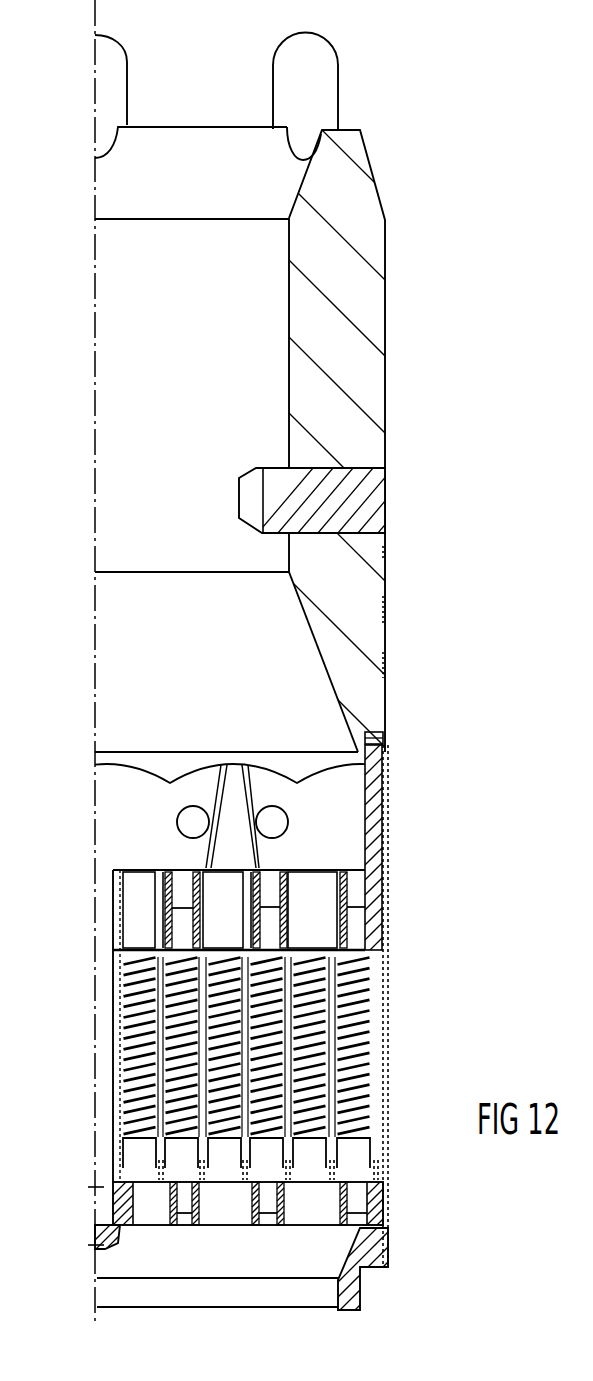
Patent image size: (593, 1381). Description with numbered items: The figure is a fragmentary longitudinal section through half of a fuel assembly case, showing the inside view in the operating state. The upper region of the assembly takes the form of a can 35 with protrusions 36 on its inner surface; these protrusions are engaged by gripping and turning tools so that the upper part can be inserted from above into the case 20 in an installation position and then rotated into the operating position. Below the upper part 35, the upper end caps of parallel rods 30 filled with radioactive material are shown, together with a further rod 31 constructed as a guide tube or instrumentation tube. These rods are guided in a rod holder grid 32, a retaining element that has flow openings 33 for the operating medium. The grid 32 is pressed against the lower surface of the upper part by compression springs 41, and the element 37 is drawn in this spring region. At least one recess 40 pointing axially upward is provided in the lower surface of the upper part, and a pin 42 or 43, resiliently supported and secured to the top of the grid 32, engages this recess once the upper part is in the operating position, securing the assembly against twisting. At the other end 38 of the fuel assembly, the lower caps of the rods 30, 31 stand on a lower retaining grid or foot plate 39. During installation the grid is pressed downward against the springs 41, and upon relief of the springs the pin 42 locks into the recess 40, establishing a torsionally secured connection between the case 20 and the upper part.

The case 20 is at (388, 757).
The rods 30 is at (183, 1175).
The further rod 31 is at (98, 1187).
The rod holder grid 32 is at (388, 892).
The flow openings 33 is at (313, 887).
The upper part 35 is at (365, 225).
The protrusions 36 is at (372, 485).
The guide rods 37 is at (387, 987).
The other end 38 is at (388, 1267).
The foot plate 39 is at (385, 1198).
The recess 40 is at (385, 717).
The compression springs 41 is at (363, 1030).
The pin 42 is at (388, 800).
The pin 43 is at (227, 753).